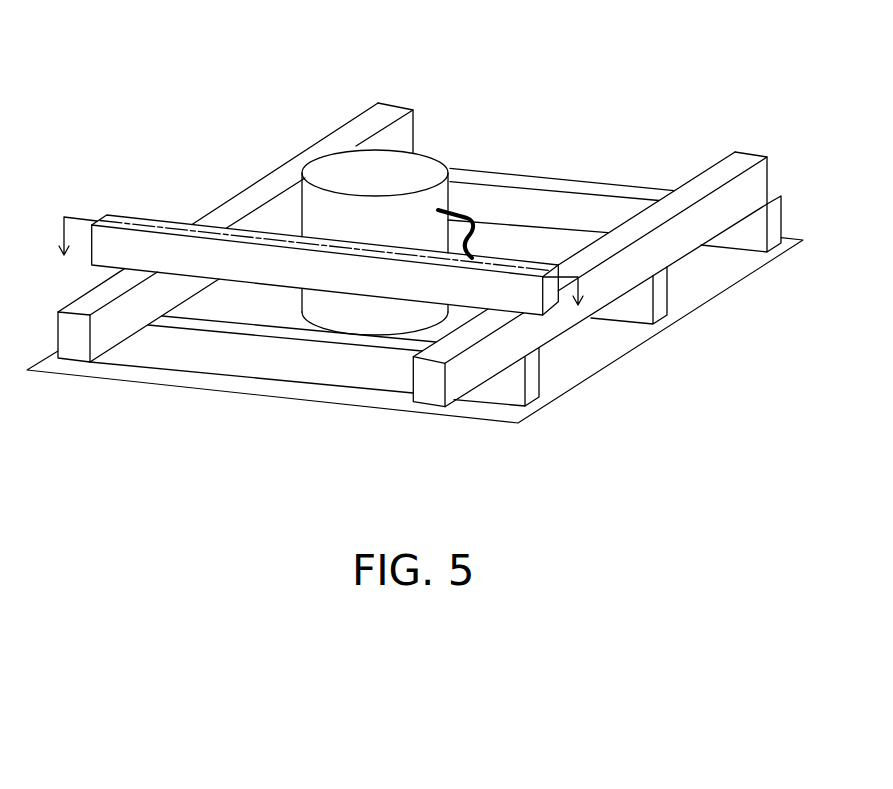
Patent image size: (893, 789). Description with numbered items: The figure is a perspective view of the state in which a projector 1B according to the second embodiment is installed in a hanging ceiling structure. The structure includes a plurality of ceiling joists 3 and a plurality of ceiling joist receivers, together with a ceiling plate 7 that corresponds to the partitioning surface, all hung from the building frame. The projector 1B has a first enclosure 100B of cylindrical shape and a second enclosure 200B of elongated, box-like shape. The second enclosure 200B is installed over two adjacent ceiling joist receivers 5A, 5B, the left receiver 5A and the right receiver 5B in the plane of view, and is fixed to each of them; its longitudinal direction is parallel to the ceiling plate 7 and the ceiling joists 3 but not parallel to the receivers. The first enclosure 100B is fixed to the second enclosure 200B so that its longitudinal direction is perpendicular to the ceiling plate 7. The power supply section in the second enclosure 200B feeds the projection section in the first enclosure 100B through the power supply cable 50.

The projector 1B is at (210, 116).
The ceiling joist 3 is at (328, 374).
The ceiling joist receiver 5A is at (74, 350).
The ceiling joist receiver 5B is at (430, 395).
The ceiling plate 7 is at (567, 394).
The power supply cable 50 is at (460, 212).
The first enclosure 100B is at (333, 162).
The second enclosure 200B is at (140, 218).